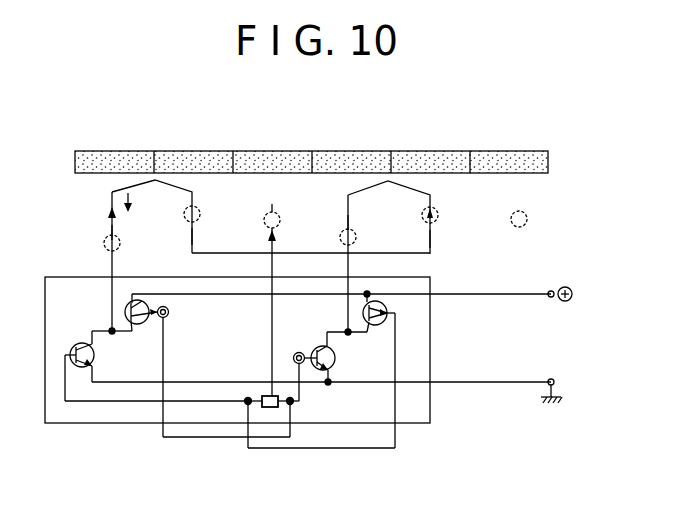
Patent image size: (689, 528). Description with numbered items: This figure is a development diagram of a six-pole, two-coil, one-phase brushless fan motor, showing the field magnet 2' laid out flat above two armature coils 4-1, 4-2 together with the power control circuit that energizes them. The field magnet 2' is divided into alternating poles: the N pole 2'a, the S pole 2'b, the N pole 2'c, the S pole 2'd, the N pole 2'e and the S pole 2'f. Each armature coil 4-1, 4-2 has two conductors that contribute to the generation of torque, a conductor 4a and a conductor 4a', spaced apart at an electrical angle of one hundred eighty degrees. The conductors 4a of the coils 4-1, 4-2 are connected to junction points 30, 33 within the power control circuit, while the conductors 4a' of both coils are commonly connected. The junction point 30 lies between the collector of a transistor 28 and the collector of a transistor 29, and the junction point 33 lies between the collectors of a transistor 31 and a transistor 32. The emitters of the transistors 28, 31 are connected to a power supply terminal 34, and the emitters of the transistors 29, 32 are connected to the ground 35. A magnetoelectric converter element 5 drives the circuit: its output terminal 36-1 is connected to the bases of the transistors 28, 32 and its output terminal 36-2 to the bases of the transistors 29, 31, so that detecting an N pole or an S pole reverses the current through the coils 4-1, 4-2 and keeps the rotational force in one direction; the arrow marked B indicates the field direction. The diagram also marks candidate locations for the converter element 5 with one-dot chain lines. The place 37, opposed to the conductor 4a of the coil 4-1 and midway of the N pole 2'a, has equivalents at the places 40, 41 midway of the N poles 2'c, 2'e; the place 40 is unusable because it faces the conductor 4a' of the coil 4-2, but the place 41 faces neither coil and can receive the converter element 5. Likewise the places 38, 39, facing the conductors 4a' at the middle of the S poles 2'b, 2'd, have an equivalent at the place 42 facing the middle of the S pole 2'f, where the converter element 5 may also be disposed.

The field magnet 2' is at (336, 139).
The N pole 2'a is at (99, 139).
The S pole 2'b is at (176, 139).
The N pole 2'c is at (255, 139).
The S pole 2'd is at (334, 139).
The N pole 2'e is at (414, 139).
The S pole 2'f is at (492, 139).
The armature coil 4-1 is at (112, 206).
The armature coil 4-2 is at (348, 200).
The conductor 4a is at (194, 233).
The conductor 4a' is at (339, 239).
The magnetic flux direction B is at (130, 217).
The place 37 is at (120, 248).
The place 38 is at (199, 215).
The place 39 is at (356, 236).
The place 40 is at (438, 214).
The place 41 is at (272, 206).
The place 42 is at (527, 214).
The transistor 28 is at (430, 291).
The transistor 29 is at (96, 356).
The junction point 30 is at (110, 328).
The transistor 31 is at (389, 306).
The transistor 32 is at (337, 360).
The junction point 33 is at (340, 330).
The power supply terminal 34 is at (551, 291).
The ground 35 is at (556, 385).
The converter element 5 is at (270, 408).
The output terminal 36-1 is at (290, 405).
The output terminal 36-2 is at (246, 405).